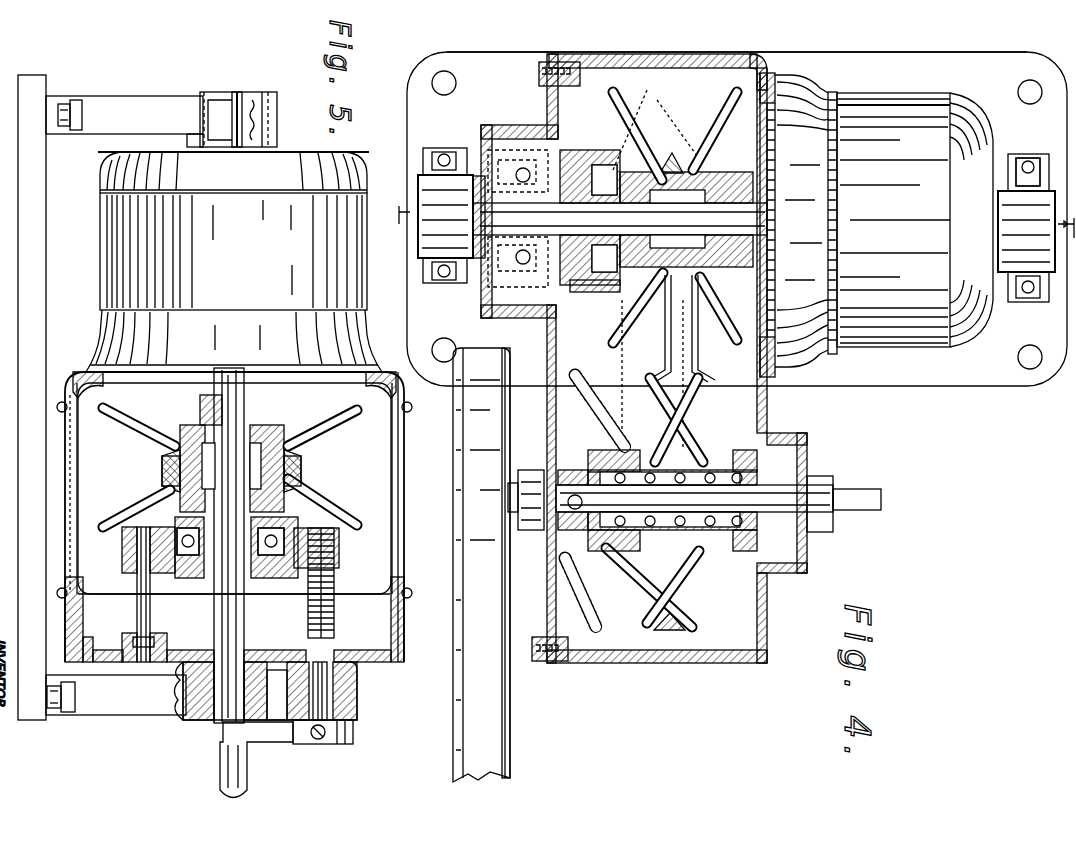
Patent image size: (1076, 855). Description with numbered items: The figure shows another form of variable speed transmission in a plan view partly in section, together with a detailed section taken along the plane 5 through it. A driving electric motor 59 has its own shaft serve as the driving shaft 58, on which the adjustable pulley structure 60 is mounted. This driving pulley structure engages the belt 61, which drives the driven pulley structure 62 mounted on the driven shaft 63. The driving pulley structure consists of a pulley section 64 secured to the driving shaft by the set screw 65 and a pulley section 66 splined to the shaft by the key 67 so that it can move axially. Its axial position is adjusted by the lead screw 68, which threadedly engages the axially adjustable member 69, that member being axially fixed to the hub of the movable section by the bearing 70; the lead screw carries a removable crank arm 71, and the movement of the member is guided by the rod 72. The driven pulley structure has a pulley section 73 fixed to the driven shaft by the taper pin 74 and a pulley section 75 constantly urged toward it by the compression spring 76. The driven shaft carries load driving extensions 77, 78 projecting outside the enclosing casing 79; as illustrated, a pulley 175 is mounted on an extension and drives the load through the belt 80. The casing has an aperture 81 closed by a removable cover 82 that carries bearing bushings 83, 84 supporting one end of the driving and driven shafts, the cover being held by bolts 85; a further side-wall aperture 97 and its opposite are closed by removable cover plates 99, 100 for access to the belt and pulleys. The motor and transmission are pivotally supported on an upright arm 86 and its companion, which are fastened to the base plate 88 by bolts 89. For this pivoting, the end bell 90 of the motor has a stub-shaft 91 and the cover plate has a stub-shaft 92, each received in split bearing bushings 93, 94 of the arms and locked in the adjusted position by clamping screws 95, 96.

In FIG. 4, the section plane 5 is at (735, 226).
In FIG. 5, the driving shaft 58 is at (214, 608).
In FIG. 4, the driving shaft 58 is at (765, 236).
In FIG. 5, the driving electric motor 59 is at (238, 262).
In FIG. 4, the driving electric motor 59 is at (893, 350).
In FIG. 5, the adjustable pulley structure 60 is at (212, 453).
In FIG. 4, the adjustable pulley structure 60 is at (686, 104).
In FIG. 5, the belt 61 is at (300, 475).
In FIG. 4, the belt 61 is at (700, 305).
In FIG. 4, the driven pulley structure 62 is at (672, 645).
In FIG. 4, the driven shaft 63 is at (595, 512).
In FIG. 5, the pulley section 64 is at (320, 492).
In FIG. 4, the pulley section 64 is at (615, 125).
In FIG. 5, the set screw 65 is at (265, 410).
In FIG. 5, the pulley section 66 is at (320, 442).
In FIG. 4, the pulley section 66 is at (735, 102).
In FIG. 5, the key 67 is at (244, 600).
In FIG. 5, the lead screw 68 is at (334, 595).
In FIG. 5, the axially adjustable member 69 is at (310, 540).
In FIG. 4, the axially adjustable member 69 is at (600, 292).
In FIG. 5, the bearing 70 is at (280, 570).
In FIG. 4, the bearing 70 is at (592, 165).
In FIG. 5, the crank arm 71 is at (285, 730).
In FIG. 5, the rod 72 is at (122, 580).
In FIG. 4, the pulley section 73 is at (700, 605).
In FIG. 4, the taper pin 74 is at (407, 155).
In FIG. 4, the pulley section 75 is at (650, 615).
In FIG. 4, the compression spring 76 is at (712, 520).
In FIG. 4, the load driving extension 77 is at (875, 515).
In FIG. 4, the load driving extension 78 is at (530, 531).
In FIG. 4, the enclosing casing 79 is at (625, 665).
In FIG. 4, the belt 80 is at (510, 690).
In FIG. 5, the aperture 81 is at (110, 715).
In FIG. 4, the aperture 81 is at (545, 122).
In FIG. 5, the removable cover 82 is at (360, 680).
In FIG. 4, the removable cover 82 is at (492, 150).
In FIG. 5, the bearing bushing 83 is at (18, 270).
In FIG. 4, the bearing bushing 84 is at (535, 532).
In FIG. 4, the bolts 85 is at (545, 660).
In FIG. 4, the upright arm 86 is at (530, 54).
In FIG. 5, the base plate 88 is at (130, 96).
In FIG. 4, the base plate 88 is at (455, 150).
In FIG. 5, the bolts 89 is at (72, 130).
In FIG. 4, the bolts 89 is at (444, 152).
In FIG. 5, the end bell 90 is at (270, 140).
In FIG. 5, the stub-shaft 91 is at (275, 100).
In FIG. 5, the stub-shaft 92 is at (214, 725).
In FIG. 5, the bearing bushing 93 is at (205, 94).
In FIG. 4, the bearing bushing 93 is at (1045, 275).
In FIG. 5, the bearing bushing 94 is at (185, 722).
In FIG. 5, the clamping screw 95 is at (245, 92).
In FIG. 4, the clamping screw 95 is at (1028, 168).
In FIG. 4, the clamping screw 96 is at (445, 278).
In FIG. 5, the aperture 97 is at (403, 440).
In FIG. 5, the removable cover plate 99 is at (403, 510).
In FIG. 5, the removable cover plate 100 is at (66, 488).
In FIG. 4, the removable cover plate 100 is at (720, 400).
In FIG. 5, the pulley 175 is at (412, 595).